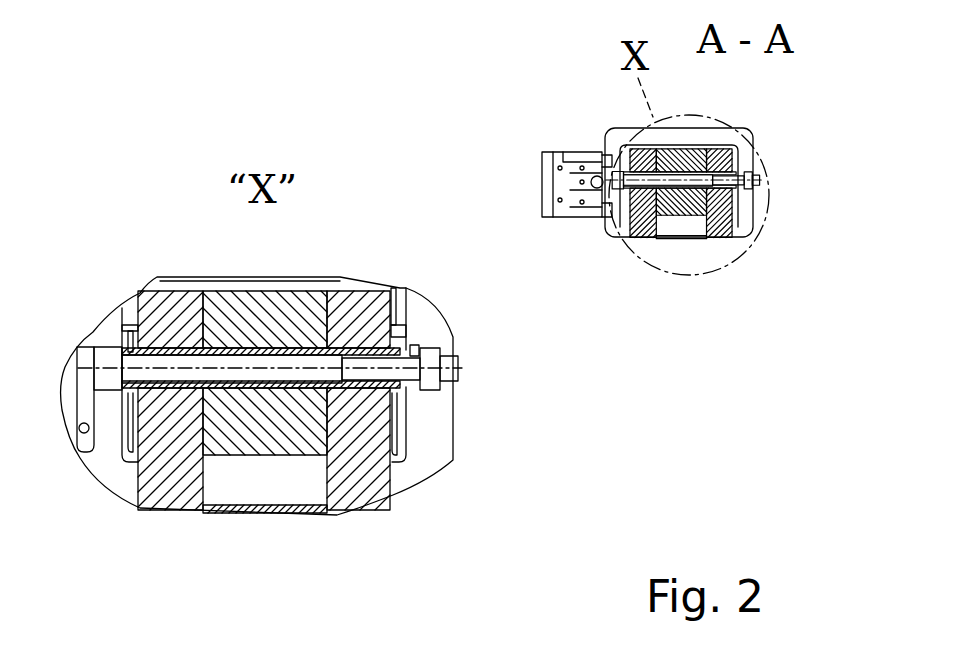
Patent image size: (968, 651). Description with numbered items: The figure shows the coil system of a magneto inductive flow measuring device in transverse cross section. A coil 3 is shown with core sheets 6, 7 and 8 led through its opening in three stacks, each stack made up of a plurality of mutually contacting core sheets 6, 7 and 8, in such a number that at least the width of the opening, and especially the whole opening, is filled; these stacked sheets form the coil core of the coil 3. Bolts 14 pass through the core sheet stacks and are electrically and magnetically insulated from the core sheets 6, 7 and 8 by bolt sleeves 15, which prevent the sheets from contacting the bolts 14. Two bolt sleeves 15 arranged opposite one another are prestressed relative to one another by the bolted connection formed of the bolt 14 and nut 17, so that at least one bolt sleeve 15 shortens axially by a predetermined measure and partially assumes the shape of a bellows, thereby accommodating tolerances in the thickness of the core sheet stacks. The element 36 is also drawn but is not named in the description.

The coil 3 is at (752, 137).
The core sheet 6 is at (360, 490).
The core sheet 7 is at (281, 445).
The core sheet 8 is at (178, 493).
The bolt 14 is at (109, 357).
The bolt sleeve 15 is at (393, 323).
The nut 17 is at (430, 358).
The control unit 36 is at (552, 160).